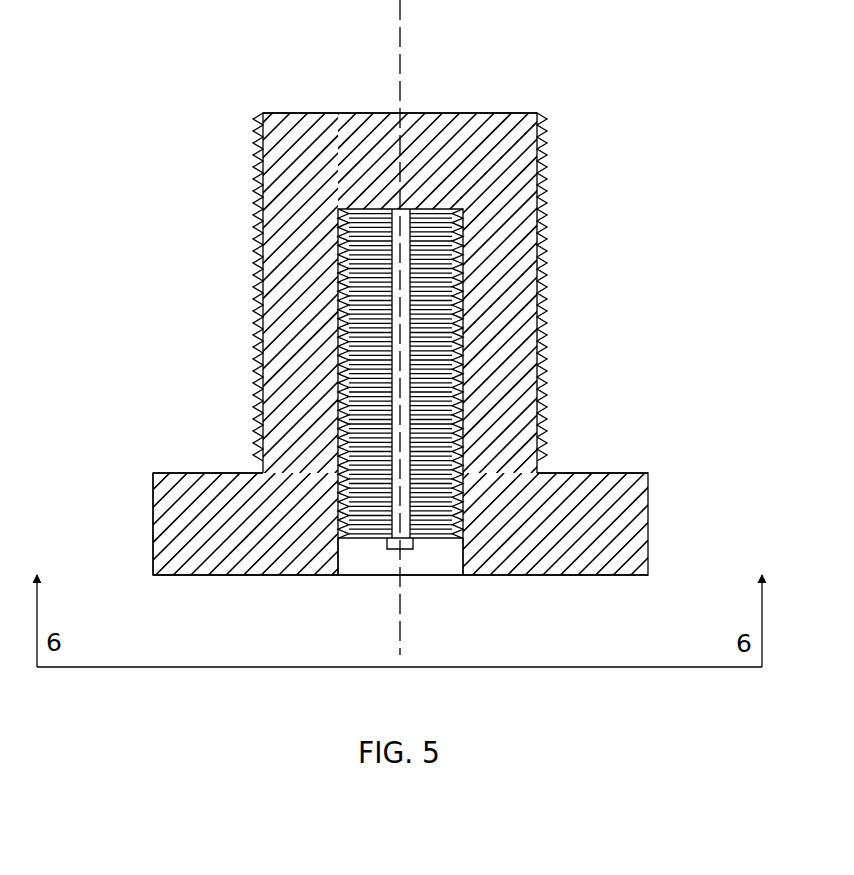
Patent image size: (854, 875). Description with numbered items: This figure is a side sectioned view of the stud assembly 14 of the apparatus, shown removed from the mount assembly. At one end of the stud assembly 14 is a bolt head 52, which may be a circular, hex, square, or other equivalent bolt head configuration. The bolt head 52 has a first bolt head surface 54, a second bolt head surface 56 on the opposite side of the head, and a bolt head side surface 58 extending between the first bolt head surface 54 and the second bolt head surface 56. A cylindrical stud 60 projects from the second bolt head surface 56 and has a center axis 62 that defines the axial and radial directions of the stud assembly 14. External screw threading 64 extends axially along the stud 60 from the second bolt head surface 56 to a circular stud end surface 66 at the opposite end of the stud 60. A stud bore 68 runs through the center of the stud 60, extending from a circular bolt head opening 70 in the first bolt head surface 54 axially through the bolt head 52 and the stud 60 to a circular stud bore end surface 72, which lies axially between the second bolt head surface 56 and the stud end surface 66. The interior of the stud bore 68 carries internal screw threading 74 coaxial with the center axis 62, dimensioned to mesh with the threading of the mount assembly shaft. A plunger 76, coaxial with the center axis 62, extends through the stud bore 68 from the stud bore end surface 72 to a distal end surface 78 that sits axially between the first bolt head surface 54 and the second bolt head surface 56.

The stud assembly 14 is at (671, 162).
The bolt head 52 is at (153, 512).
The first bolt head surface 54 is at (172, 575).
The second bolt head surface 56 is at (170, 473).
The bolt head side surface 58 is at (153, 549).
The stud 60 is at (431, 293).
The center axis 62 is at (398, 67).
The external screw threading 64 is at (547, 234).
The stud end surface 66 is at (320, 113).
The stud bore 68 is at (359, 555).
The bolt head opening 70 is at (432, 567).
The stud bore end surface 72 is at (326, 375).
The internal screw threading 74 is at (347, 293).
The plunger 76 is at (400, 374).
The distal end surface 78 is at (389, 550).